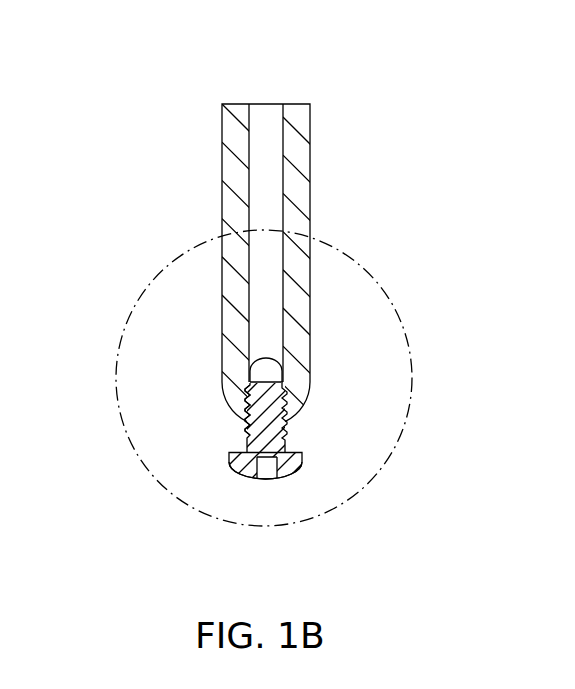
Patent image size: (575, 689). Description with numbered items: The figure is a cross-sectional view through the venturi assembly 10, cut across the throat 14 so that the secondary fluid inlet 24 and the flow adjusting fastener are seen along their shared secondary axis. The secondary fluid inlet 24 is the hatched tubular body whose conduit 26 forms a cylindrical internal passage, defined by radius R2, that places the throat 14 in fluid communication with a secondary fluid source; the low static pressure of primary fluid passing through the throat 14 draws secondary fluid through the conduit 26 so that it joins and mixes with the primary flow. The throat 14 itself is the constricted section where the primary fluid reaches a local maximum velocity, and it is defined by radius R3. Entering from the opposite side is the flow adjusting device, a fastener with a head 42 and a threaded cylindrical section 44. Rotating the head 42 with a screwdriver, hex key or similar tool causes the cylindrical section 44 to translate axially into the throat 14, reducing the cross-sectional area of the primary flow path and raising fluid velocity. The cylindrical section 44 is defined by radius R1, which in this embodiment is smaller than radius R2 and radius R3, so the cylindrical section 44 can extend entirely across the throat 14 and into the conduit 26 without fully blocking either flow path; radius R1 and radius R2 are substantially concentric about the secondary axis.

The venturi assembly 10 is at (392, 192).
The throat 14 is at (279, 363).
The secondary fluid inlet 24 is at (309, 168).
The conduit 26 is at (268, 118).
The head 42 is at (244, 478).
The cylindrical section 44 is at (263, 415).
The radius R1 is at (280, 460).
The radius R2 is at (258, 178).
The radius R3 is at (261, 370).